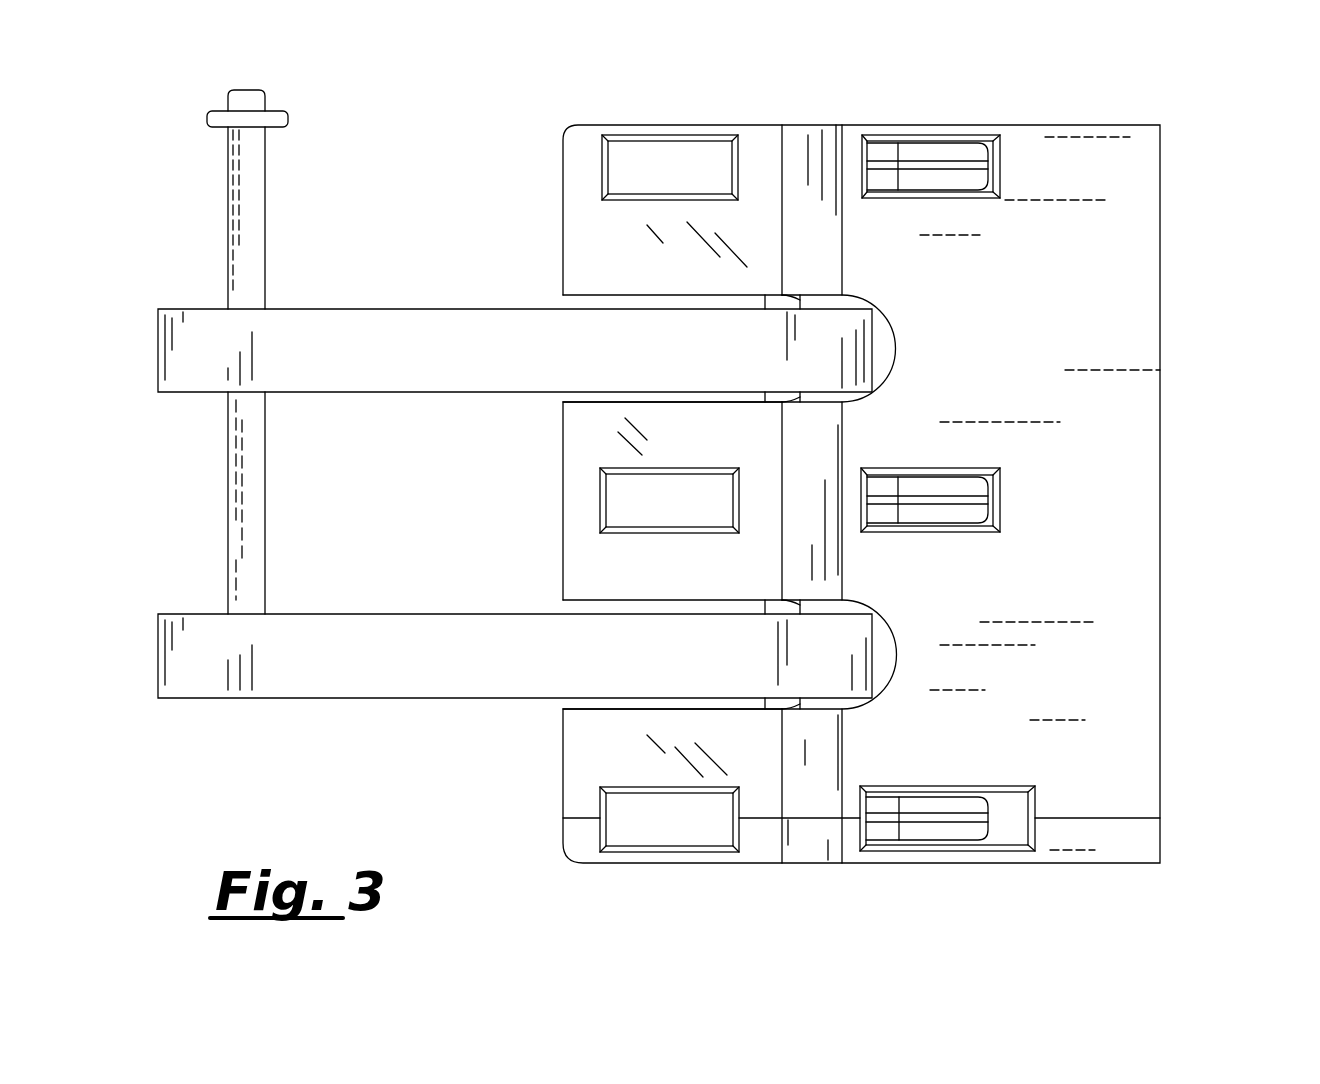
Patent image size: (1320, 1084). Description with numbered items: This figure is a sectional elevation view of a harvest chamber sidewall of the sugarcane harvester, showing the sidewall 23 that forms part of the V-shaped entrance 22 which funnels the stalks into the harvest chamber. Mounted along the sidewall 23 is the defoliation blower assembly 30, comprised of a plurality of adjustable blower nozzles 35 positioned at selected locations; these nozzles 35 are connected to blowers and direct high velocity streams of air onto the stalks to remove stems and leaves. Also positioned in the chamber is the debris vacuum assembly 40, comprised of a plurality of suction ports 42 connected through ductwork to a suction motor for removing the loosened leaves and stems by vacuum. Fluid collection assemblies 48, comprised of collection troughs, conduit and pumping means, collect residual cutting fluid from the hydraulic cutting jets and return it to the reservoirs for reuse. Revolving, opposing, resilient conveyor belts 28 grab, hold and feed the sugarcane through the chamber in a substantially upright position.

The V-shaped entrance 22 is at (1113, 687).
The sidewall 23 is at (1037, 291).
The conveyor belts 28 is at (409, 336).
The defoliation blower assembly 30 is at (907, 148).
The blower nozzles 35 is at (955, 166).
The debris vacuum assembly 40 is at (899, 822).
The suction ports 42 is at (957, 818).
The fluid collection assemblies 48 is at (634, 160).